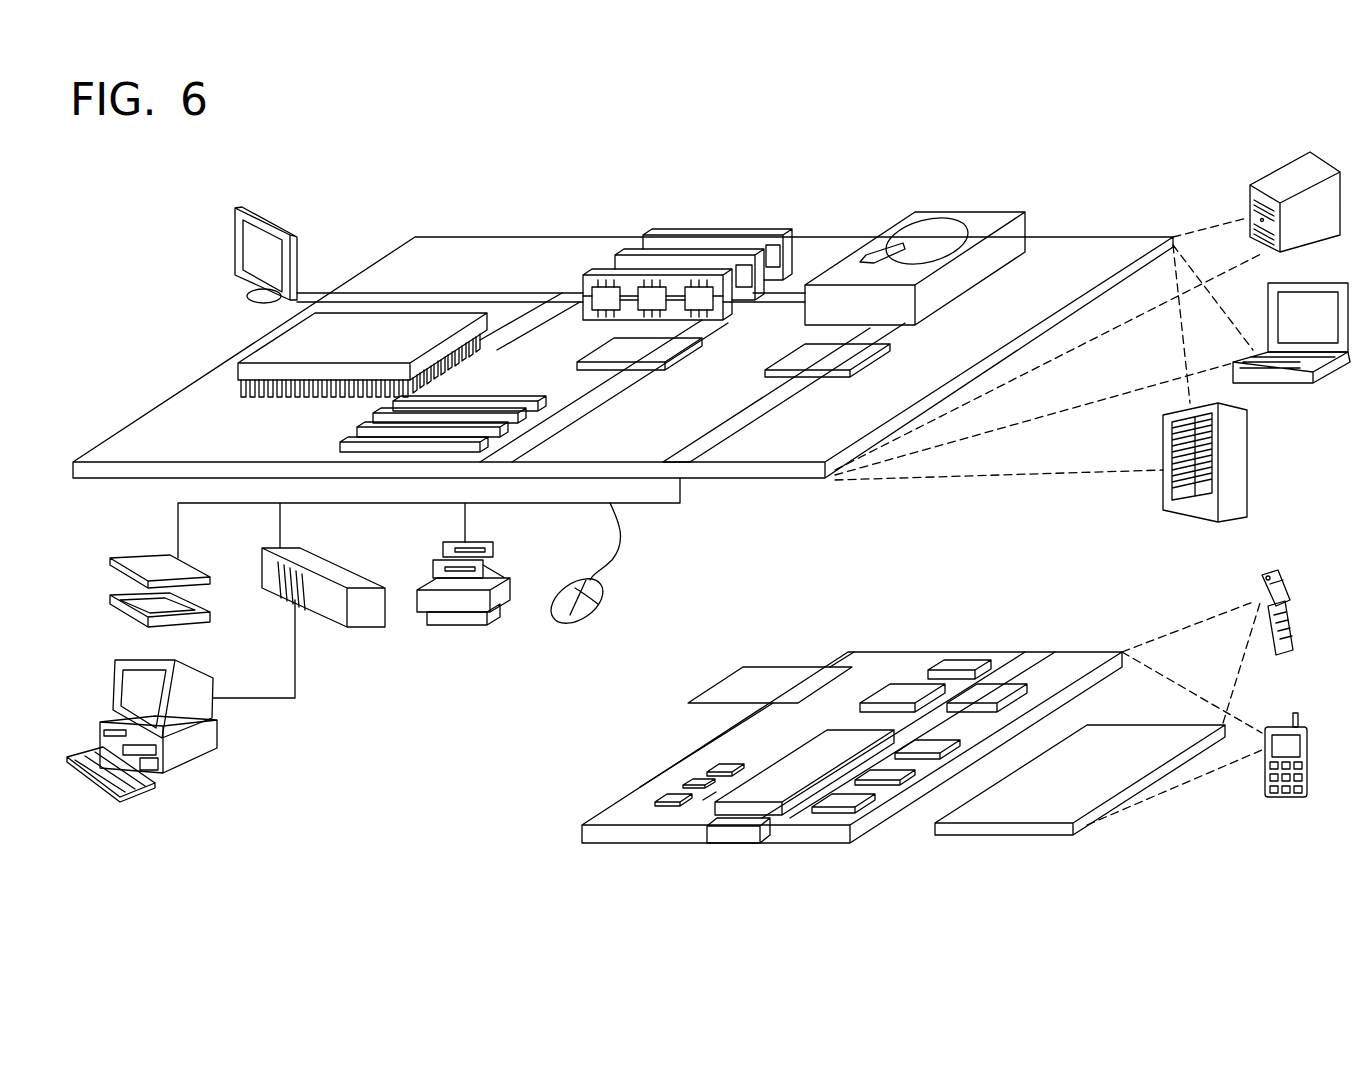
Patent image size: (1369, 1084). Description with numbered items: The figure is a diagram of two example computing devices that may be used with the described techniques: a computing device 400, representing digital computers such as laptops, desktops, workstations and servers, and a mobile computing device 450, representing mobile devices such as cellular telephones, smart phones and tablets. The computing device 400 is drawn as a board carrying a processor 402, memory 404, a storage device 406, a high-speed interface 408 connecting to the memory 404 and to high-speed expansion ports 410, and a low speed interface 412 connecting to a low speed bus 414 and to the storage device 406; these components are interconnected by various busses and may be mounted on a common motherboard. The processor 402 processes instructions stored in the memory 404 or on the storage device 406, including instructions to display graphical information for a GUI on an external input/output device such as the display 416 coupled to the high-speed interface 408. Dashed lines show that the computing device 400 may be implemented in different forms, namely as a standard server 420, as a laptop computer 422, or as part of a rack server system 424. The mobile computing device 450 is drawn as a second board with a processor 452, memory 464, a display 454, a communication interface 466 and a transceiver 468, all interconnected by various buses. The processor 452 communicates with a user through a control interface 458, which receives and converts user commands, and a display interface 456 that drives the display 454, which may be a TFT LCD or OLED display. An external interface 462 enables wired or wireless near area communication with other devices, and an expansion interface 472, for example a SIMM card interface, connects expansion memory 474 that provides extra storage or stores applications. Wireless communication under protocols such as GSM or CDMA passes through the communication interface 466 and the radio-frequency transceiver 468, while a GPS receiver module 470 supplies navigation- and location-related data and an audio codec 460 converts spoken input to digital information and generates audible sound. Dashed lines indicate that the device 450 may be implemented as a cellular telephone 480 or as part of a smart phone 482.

The computing device 400 is at (362, 176).
The processor 402 is at (262, 347).
The memory 404 is at (722, 232).
The storage device 406 is at (960, 212).
The high-speed interface 408 is at (653, 348).
The high-speed expansion ports 410 is at (362, 426).
The low speed interface 412 is at (801, 353).
The low speed bus 414 is at (684, 452).
The display 416 is at (240, 207).
The standard server 420 is at (1270, 182).
The laptop computer 422 is at (1325, 285).
The rack server system 424 is at (1248, 463).
The mobile computing device 450 is at (528, 860).
The processor 452 is at (770, 776).
The display 454 is at (1118, 742).
The display interface 456 is at (852, 800).
The control interface 458 is at (890, 775).
The audio codec 460 is at (917, 748).
The external interface 462 is at (733, 827).
The memory 464 is at (683, 782).
The communication interface 466 is at (908, 687).
The transceiver 468 is at (1000, 687).
The GPS receiver module 470 is at (960, 662).
The expansion interface 472 is at (828, 663).
The expansion memory 474 is at (743, 666).
The cellular telephone 480 is at (1265, 575).
The smart phone 482 is at (1279, 727).